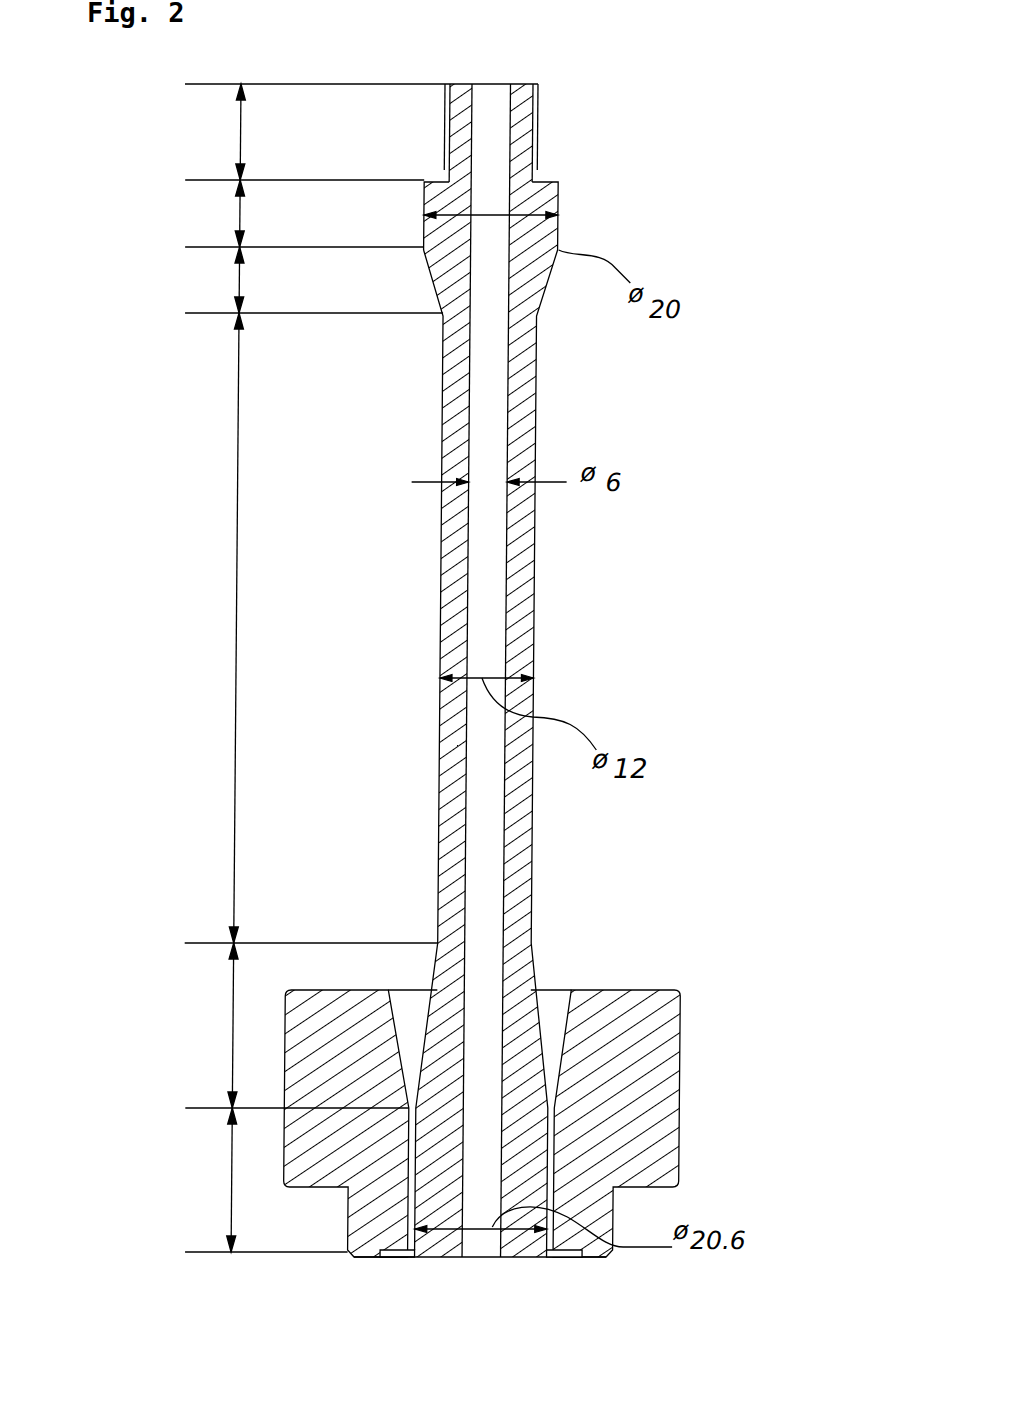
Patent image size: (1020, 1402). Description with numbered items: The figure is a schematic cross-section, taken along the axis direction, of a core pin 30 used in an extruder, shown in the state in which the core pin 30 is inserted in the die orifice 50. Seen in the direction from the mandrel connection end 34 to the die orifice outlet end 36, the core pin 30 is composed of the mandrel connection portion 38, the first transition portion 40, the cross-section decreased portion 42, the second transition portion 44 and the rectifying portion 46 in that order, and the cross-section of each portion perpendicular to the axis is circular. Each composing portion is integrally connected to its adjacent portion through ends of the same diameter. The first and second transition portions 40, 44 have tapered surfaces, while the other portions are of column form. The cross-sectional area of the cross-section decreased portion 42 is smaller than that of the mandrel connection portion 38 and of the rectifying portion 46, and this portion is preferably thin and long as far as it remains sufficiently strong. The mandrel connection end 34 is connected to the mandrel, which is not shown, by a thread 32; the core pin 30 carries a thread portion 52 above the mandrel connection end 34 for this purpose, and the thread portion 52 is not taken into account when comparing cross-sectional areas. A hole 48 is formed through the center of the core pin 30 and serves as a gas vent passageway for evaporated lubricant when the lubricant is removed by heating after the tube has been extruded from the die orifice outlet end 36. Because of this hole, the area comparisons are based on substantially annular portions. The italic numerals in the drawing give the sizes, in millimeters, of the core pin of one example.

The core pin 30 is at (642, 602).
The thread 32 is at (540, 110).
The mandrel connection end 34 is at (545, 182).
The die orifice outlet end 36 is at (533, 1258).
The mandrel connection portion 38 is at (153, 182).
The first transition portion 40 is at (153, 249).
The cross-section decreased portion 42 is at (153, 315).
The second transition portion 44 is at (153, 945).
The rectifying portion 46 is at (153, 1110).
The hole 48 is at (495, 1247).
The die orifice 50 is at (669, 1117).
The thread portion 52 is at (153, 84).